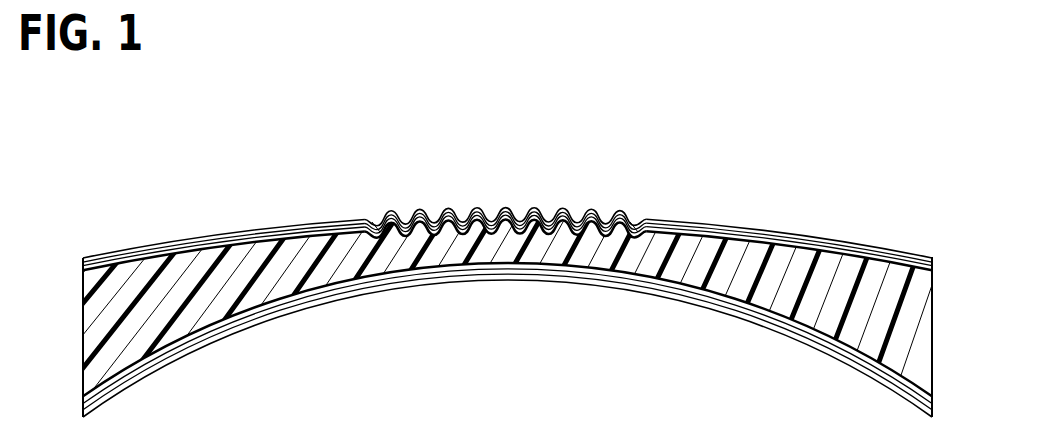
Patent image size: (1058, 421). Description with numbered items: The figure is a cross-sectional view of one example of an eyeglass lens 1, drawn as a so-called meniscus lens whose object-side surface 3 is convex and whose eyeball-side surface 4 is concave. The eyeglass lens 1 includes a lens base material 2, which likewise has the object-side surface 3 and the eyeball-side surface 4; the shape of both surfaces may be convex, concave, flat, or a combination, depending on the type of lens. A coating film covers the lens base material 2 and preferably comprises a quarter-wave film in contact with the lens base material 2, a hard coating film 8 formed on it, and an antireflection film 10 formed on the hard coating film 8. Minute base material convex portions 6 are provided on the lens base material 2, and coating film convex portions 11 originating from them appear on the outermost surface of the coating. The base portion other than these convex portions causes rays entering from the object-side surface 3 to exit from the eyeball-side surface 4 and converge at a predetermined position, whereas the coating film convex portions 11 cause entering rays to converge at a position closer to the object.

The eyeglass lens 1 is at (812, 167).
The lens base material 2 is at (88, 343).
The object-side surface 3 is at (212, 247).
The eyeball-side surface 4 is at (216, 337).
The base material convex portions 6 is at (384, 222).
The hard coating film 8 is at (261, 239).
The antireflection film 10 is at (301, 231).
The coating film convex portions 11 is at (474, 210).